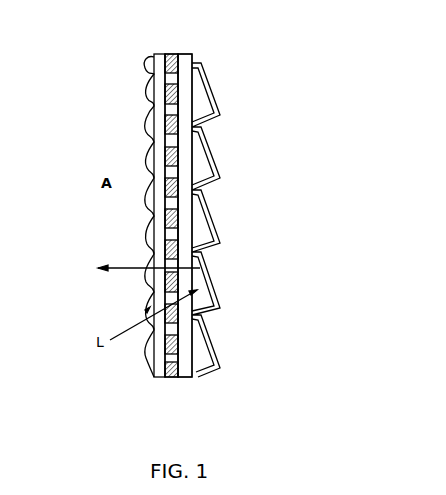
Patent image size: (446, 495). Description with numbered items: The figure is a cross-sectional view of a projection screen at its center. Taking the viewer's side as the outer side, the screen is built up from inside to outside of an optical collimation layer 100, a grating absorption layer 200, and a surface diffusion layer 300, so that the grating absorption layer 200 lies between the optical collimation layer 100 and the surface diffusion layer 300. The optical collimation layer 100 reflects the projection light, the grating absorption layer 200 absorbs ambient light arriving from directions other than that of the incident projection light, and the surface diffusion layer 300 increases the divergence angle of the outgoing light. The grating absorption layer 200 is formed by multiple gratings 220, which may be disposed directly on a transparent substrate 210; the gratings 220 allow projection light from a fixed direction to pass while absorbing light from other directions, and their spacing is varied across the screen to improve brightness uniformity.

The optical collimation layer 100 is at (208, 97).
The grating absorption layer 200 is at (173, 53).
The transparent substrate 210 is at (183, 370).
The gratings 220 is at (168, 187).
The surface diffusion layer 300 is at (152, 75).